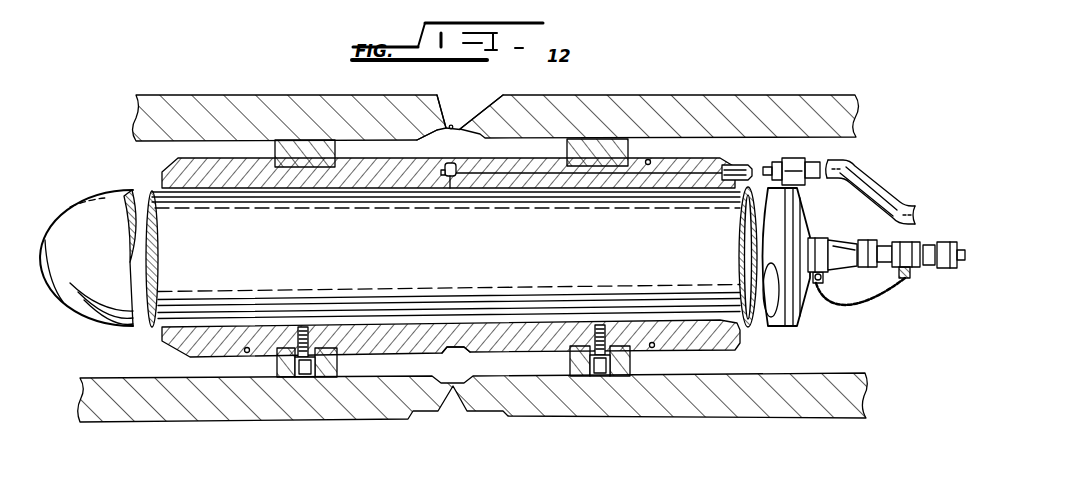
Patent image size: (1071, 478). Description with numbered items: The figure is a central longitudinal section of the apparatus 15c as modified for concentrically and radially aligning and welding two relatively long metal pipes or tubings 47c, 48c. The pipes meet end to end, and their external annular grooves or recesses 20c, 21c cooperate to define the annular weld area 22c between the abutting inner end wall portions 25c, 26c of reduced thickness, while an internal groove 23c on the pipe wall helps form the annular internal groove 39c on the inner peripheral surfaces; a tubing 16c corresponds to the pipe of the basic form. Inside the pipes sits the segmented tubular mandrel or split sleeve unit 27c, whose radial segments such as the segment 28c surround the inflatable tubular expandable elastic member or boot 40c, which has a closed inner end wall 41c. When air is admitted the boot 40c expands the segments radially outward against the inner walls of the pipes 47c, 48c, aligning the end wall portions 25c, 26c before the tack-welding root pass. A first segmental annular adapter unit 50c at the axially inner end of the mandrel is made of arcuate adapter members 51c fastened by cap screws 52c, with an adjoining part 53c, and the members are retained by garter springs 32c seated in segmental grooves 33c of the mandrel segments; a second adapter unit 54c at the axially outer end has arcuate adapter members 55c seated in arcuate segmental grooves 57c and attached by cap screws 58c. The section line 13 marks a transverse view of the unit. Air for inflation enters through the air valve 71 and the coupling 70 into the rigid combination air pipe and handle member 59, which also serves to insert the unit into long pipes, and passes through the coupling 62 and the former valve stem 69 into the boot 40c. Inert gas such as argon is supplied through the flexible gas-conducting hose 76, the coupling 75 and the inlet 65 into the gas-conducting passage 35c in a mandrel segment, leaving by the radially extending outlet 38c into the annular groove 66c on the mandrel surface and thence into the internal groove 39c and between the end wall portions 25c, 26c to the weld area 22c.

The metal pipe or tubing 47c is at (242, 94).
The metal pipe or tubing 48c is at (690, 93).
The inner end wall portion 25c is at (441, 126).
The annular groove or recess 20c is at (446, 125).
The annular groove or recess 21c is at (453, 125).
The inner end wall portion 26c is at (463, 119).
The annular internal groove 39c is at (430, 136).
The annular groove or recess 23c is at (451, 163).
The radially extending outlet 38c is at (452, 178).
The radial segment 28c is at (367, 190).
The gas-conducting passage 35c is at (538, 176).
The metal pipe or tubing 16c is at (240, 195).
The segmented tubular mandrel or split sleeve unit 27c is at (418, 194).
The segmental groove 33c is at (653, 343).
The garter spring 32c is at (246, 353).
The annular groove 66c is at (464, 362).
The arcuate adapter member 51c is at (284, 347).
The clamp block 53c is at (335, 372).
The cap screw 52c is at (311, 378).
The first segmental annular adapter unit 50c is at (340, 388).
The arcuate segmental groove 57c is at (578, 345).
The arcuate adapter member 55c is at (622, 345).
The cap screw 58c is at (609, 345).
The second adapter unit 54c is at (571, 382).
The annular groove or weld area 22c is at (455, 397).
The section line 13 is at (570, 78).
The closed inner end wall 41c is at (76, 295).
The apparatus 15c is at (110, 334).
The inlet 65 is at (740, 169).
The coupling 75 is at (799, 160).
The flexible gas-conducting hose 76 is at (849, 163).
The tubular expandable elastic member or boot 40c is at (750, 310).
The valve stem 69 is at (847, 263).
The combination air pipe or tubing and handle member 59 is at (871, 237).
The coupling 62 is at (872, 272).
The coupling 70 is at (941, 270).
The air valve 71 is at (958, 270).